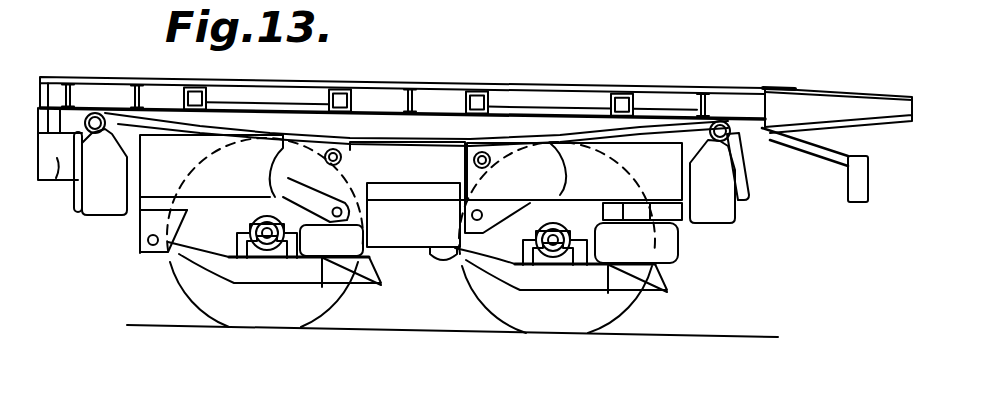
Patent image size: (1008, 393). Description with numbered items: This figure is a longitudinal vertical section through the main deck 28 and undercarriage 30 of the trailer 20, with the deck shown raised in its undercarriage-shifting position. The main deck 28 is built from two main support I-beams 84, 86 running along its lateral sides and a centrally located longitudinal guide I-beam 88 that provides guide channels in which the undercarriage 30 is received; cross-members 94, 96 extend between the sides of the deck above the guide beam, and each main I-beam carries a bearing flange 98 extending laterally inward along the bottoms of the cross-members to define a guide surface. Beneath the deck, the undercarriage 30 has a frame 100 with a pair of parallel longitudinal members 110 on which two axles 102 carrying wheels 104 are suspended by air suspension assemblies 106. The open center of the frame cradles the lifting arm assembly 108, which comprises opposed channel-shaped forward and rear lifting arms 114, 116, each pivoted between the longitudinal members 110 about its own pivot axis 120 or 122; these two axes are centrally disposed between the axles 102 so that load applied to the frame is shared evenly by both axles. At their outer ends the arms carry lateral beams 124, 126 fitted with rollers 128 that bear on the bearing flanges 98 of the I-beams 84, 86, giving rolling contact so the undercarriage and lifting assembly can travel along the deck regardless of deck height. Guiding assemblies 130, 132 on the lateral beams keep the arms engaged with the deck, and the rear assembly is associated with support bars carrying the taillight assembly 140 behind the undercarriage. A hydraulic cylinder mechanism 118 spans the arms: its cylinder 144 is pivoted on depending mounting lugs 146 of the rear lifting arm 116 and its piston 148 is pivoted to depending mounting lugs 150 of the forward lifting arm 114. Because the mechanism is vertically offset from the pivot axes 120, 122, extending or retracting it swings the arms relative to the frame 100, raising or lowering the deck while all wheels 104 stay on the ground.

The trailer 20 is at (513, 70).
The main deck 28 is at (690, 88).
The undercarriage 30 is at (148, 263).
The main support I-beam 84 is at (803, 100).
The main support I-beam 86 is at (58, 166).
The longitudinal guide I-beam 88 is at (47, 127).
The cross-member 94 is at (642, 100).
The cross-member 96 is at (413, 100).
The bearing flange 98 is at (748, 120).
The undercarriage frame 100 is at (448, 132).
The axle 102 is at (263, 253).
The wheel 104 is at (324, 294).
The air suspension assembly 106 is at (203, 288).
The lifting arm assembly 108 is at (742, 212).
The longitudinal frame member 110 is at (362, 142).
The forward lifting arm 114 is at (286, 143).
The rear lifting arm 116 is at (547, 143).
The hydraulic cylinder mechanism 118 is at (431, 258).
The pivot axis 120 is at (341, 162).
The pivot axis 122 is at (474, 168).
The lateral beam 124 is at (103, 205).
The lateral beam 126 is at (722, 208).
The roller 128 is at (90, 132).
The guiding assembly 130 is at (83, 105).
The guiding assembly 132 is at (597, 107).
The taillight assembly 140 is at (867, 185).
The cylinder 144 is at (416, 249).
The mounting lug 146 is at (502, 200).
The piston 148 is at (362, 214).
The mounting lug 150 is at (315, 192).